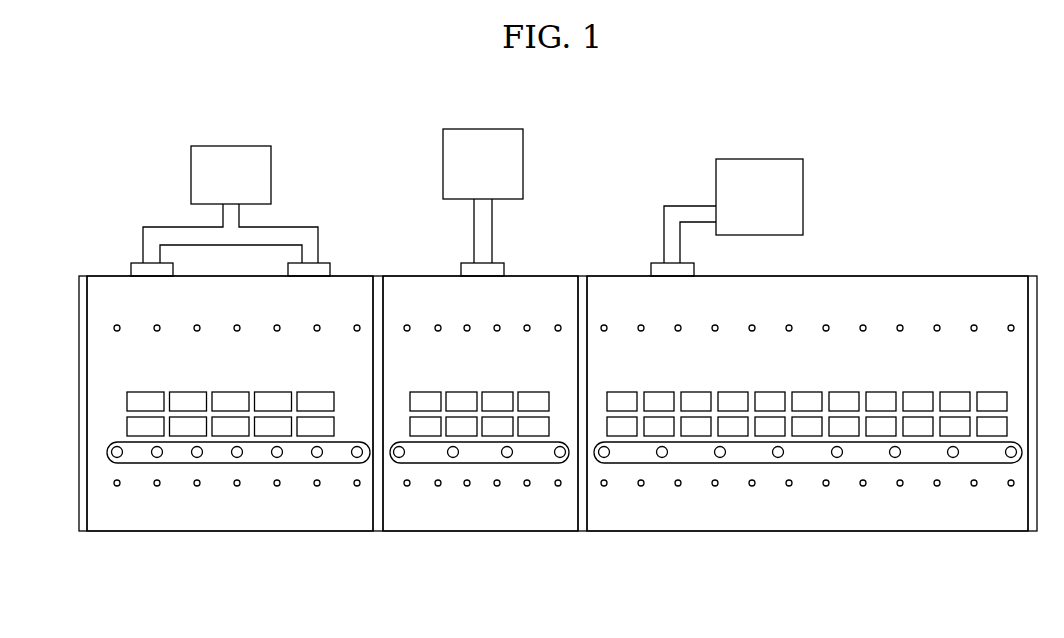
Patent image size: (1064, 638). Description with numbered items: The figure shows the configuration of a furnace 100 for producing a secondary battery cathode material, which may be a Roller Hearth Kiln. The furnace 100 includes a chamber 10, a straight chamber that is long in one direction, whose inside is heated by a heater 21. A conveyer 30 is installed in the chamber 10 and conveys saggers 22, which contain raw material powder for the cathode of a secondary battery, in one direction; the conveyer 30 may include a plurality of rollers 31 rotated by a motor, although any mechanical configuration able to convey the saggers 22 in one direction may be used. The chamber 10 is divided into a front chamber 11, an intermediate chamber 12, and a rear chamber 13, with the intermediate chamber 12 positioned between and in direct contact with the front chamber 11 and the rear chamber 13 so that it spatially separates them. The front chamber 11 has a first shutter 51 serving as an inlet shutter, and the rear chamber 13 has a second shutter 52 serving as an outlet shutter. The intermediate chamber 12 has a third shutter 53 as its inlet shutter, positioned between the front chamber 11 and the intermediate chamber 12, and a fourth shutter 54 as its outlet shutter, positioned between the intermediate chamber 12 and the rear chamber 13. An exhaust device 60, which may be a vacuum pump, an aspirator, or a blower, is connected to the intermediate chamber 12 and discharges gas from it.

The furnace 100 is at (611, 146).
The chamber 10 is at (903, 276).
The front chamber 11 is at (222, 531).
The intermediate chamber 12 is at (478, 531).
The rear chamber 13 is at (815, 531).
The heater 21 is at (358, 322).
The saggers 22 is at (182, 400).
The conveyer 30 is at (142, 463).
The rollers 31 is at (661, 460).
The first shutter 51 is at (80, 393).
The second shutter 52 is at (1033, 508).
The third shutter 53 is at (374, 500).
The fourth shutter 54 is at (580, 500).
The exhaust device 60 is at (485, 138).